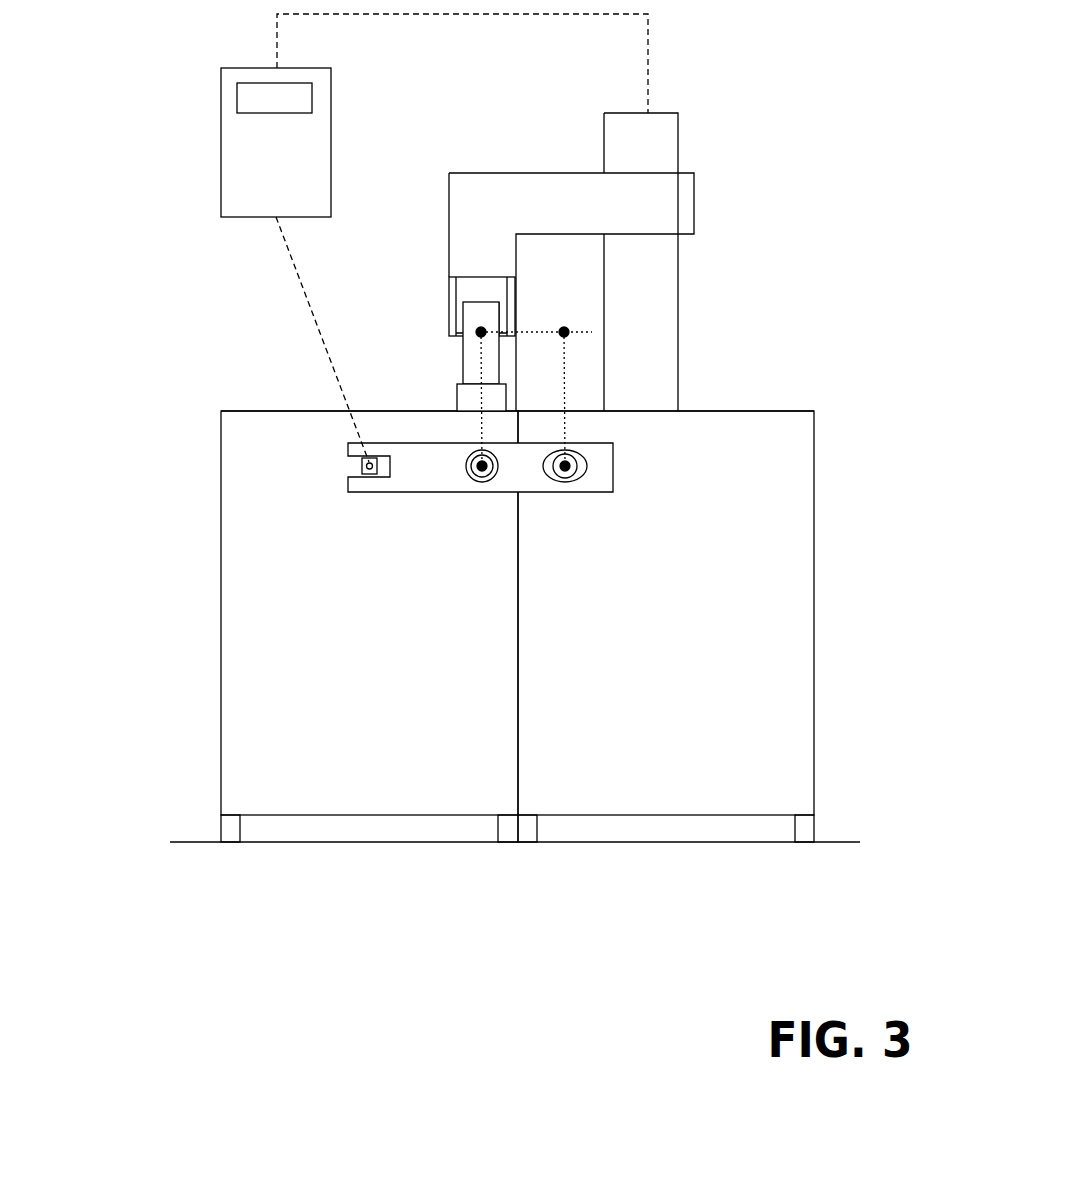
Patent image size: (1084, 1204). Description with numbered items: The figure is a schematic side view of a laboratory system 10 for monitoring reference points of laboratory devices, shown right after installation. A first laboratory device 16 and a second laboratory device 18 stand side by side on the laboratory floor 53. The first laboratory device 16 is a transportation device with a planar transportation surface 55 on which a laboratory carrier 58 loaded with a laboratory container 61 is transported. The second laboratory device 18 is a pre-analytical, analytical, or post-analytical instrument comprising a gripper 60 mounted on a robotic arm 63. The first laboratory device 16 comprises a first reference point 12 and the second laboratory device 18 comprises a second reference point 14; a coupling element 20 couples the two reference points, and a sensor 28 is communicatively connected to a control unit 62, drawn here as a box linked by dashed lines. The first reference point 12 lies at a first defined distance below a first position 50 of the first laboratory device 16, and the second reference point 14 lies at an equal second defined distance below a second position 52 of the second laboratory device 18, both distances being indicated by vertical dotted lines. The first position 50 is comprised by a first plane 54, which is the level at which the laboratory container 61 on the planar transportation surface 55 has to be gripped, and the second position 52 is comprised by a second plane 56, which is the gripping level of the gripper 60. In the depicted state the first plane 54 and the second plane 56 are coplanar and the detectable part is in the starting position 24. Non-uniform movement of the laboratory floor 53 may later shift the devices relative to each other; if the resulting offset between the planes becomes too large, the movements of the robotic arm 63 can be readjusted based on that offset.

The laboratory system 10 is at (132, 227).
The first reference point 12 is at (470, 458).
The second reference point 14 is at (570, 478).
The first laboratory device 16 is at (250, 684).
The second laboratory device 18 is at (789, 578).
The coupling element 20 is at (412, 473).
The starting position 24 is at (344, 467).
The sensor 28 is at (360, 460).
The first position 50 is at (468, 327).
The second position 52 is at (568, 328).
The laboratory floor 53 is at (613, 842).
The first plane 54 is at (476, 337).
The planar transportation surface 55 is at (300, 411).
The second plane 56 is at (543, 332).
The laboratory carrier 58 is at (492, 398).
The gripper 60 is at (451, 287).
The laboratory container 61 is at (476, 312).
The control unit 62 is at (245, 190).
The robotic arm 63 is at (612, 150).